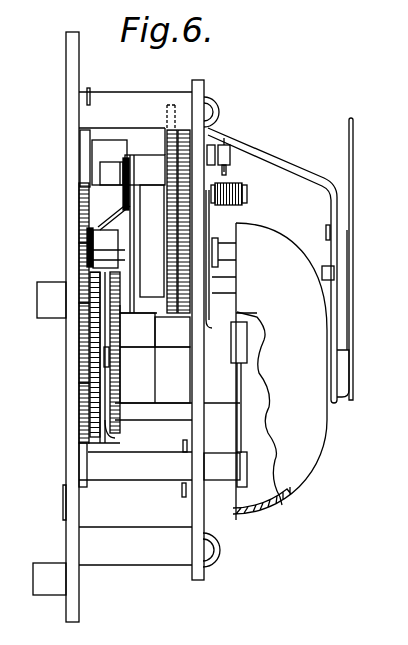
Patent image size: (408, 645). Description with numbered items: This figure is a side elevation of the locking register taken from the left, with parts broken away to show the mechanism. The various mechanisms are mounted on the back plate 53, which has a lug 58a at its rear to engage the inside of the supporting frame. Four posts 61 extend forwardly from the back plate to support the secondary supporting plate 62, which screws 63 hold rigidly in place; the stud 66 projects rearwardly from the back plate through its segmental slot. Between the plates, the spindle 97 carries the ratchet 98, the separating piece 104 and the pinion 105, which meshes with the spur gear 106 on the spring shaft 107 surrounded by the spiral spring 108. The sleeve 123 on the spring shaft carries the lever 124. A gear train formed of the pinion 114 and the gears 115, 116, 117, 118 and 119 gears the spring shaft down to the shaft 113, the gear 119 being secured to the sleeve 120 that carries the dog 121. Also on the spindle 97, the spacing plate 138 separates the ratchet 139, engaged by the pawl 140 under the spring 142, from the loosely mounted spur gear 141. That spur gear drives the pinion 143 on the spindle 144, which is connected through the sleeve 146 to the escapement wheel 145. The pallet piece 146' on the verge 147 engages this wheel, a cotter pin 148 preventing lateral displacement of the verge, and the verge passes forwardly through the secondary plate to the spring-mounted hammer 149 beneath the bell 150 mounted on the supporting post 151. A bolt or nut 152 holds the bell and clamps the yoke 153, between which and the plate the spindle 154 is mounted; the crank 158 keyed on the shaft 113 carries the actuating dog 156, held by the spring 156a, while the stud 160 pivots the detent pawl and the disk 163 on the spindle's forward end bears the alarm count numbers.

The back plate 53 is at (70, 533).
The lug 58a is at (47, 596).
The stud 66 is at (50, 300).
The secondary supporting plate 62 is at (196, 514).
The posts 61 is at (125, 557).
The screws 63 is at (212, 562).
The shaft 113 is at (78, 157).
The dog 121 is at (102, 153).
The sleeve 120 is at (148, 172).
The spiral spring 108 is at (147, 233).
The spring shaft 107 is at (86, 210).
The spur gear 106 is at (82, 238).
The pinion 105 is at (77, 340).
The escapement wheel 145 is at (77, 407).
The sleeve 123 is at (98, 257).
The lever 124 is at (115, 262).
The ratchet 98 is at (92, 357).
The separating piece 104 is at (90, 425).
The spacing plate 138 is at (108, 383).
The ratchet 139 is at (108, 350).
The spring 142 is at (113, 320).
The spur gear 141 is at (118, 318).
The spindle 97 is at (172, 318).
The gear 117 is at (155, 375).
The pinion 143 is at (117, 415).
The sleeve 146 is at (128, 434).
The pawl 140 is at (170, 250).
The gear 118 is at (180, 262).
The gear 119 is at (168, 162).
The gear 116 is at (167, 128).
The spindle 144 is at (170, 412).
The verge 147 is at (135, 473).
The cotter pin 148 is at (182, 488).
The pallet piece 146' is at (97, 482).
The gear 115 is at (215, 149).
The crank 158 is at (228, 167).
The stud 160 is at (236, 155).
The disk 163 is at (353, 168).
The spring 156a is at (228, 206).
The actuating dog 156 is at (219, 277).
The pinion 114 is at (219, 294).
The bell 150 is at (307, 423).
The supporting post 151 is at (247, 402).
The hammer 149 is at (239, 340).
The spindle 154 is at (319, 255).
The yoke 153 is at (338, 313).
The bolt or nut 152 is at (339, 367).